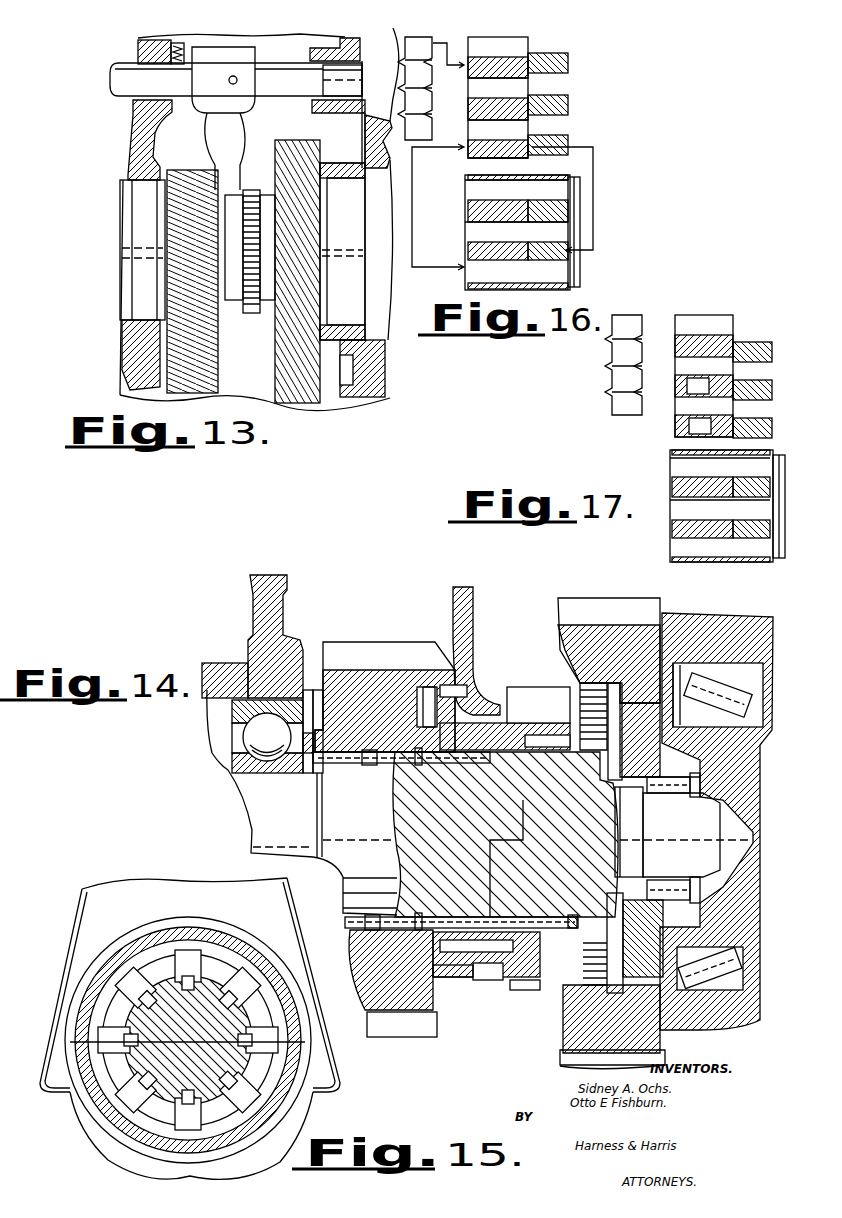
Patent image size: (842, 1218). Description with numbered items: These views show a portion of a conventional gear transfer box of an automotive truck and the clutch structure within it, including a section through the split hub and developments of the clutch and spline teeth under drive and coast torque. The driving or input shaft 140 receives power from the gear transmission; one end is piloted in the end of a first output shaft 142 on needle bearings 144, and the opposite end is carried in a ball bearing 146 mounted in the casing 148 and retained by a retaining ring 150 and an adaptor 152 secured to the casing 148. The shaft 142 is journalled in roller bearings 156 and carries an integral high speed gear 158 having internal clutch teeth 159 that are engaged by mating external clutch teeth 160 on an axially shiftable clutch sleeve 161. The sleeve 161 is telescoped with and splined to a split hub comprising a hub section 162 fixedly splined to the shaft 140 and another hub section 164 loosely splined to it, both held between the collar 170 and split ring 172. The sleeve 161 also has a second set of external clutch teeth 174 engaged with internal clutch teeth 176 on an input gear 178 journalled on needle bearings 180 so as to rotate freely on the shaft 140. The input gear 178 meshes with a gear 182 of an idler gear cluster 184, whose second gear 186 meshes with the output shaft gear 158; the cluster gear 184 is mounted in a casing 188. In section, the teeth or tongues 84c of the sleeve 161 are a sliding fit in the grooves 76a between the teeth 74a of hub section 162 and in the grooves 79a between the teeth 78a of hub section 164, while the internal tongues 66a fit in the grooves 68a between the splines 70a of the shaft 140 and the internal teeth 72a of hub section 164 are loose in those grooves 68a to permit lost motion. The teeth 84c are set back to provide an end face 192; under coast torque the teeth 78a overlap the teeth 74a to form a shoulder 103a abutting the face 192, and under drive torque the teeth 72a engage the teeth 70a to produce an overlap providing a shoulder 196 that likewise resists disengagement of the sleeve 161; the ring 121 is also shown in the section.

In FIG. 16, the internal teeth or tongues 66a is at (553, 210).
In FIG. 17, the internal teeth or tongues 66a is at (773, 478).
In FIG. 15, the internal teeth or tongues 66a is at (180, 1000).
In FIG. 15, the grooves 68a is at (222, 1095).
In FIG. 16, the tongues or splines 70a is at (478, 188).
In FIG. 17, the tongues or splines 70a is at (680, 468).
In FIG. 15, the tongues or splines 70a is at (192, 1192).
In FIG. 16, the internal teeth or tongues 72a is at (480, 208).
In FIG. 17, the internal teeth or tongues 72a is at (680, 484).
In FIG. 15, the internal teeth or tongues 72a is at (215, 1140).
In FIG. 16, the teeth 74a is at (575, 147).
In FIG. 17, the teeth 74a is at (752, 343).
In FIG. 15, the teeth 74a is at (195, 935).
In FIG. 15, the grooves or recesses 76a is at (165, 975).
In FIG. 16, the teeth 78a is at (468, 154).
In FIG. 15, the teeth 78a is at (130, 1130).
In FIG. 15, the grooves or recesses 79a is at (150, 1135).
In FIG. 16, the teeth or tongues 84c is at (510, 88).
In FIG. 17, the teeth or tongues 84c is at (692, 366).
In FIG. 14, the teeth or tongues 84c is at (470, 975).
In FIG. 15, the teeth or tongues 84c is at (212, 950).
In FIG. 16, the shoulder 103a is at (523, 132).
In FIG. 15, the clutch ring 121 is at (272, 1130).
In FIG. 14, the driving or input shaft 140 is at (265, 812).
In FIG. 14, the first output shaft 142 is at (707, 757).
In FIG. 14, the needle bearings 144 is at (685, 875).
In FIG. 14, the ball bearing 146 is at (237, 735).
In FIG. 14, the casing 148 is at (262, 623).
In FIG. 14, the retaining ring 150 is at (232, 708).
In FIG. 14, the adaptor 152 is at (218, 664).
In FIG. 14, the roller bearings 156 is at (722, 672).
In FIG. 13, the high speed gear 158 is at (286, 146).
In FIG. 14, the high speed gear 158 is at (612, 605).
In FIG. 14, the internal clutch teeth 159 is at (590, 668).
In FIG. 14, the external clutch teeth 160 is at (595, 685).
In FIG. 14, the clutch sleeve 161 is at (548, 748).
In FIG. 14, the hub section 162 is at (545, 990).
In FIG. 15, the hub section 162 is at (215, 1000).
In FIG. 14, the hub section 164 is at (475, 912).
In FIG. 15, the hub section 164 is at (95, 1100).
In FIG. 14, the collar 170 is at (435, 1020).
In FIG. 17, the split ring 172 is at (777, 553).
In FIG. 14, the split ring 172 is at (575, 765).
In FIG. 16, the external clutch teeth 174 is at (404, 88).
In FIG. 17, the external clutch teeth 174 is at (615, 403).
In FIG. 14, the external clutch teeth 174 is at (423, 700).
In FIG. 16, the internal clutch teeth 176 is at (432, 72).
In FIG. 17, the internal clutch teeth 176 is at (620, 348).
In FIG. 14, the internal clutch teeth 176 is at (462, 645).
In FIG. 13, the input gear 178 is at (173, 242).
In FIG. 14, the input gear 178 is at (362, 650).
In FIG. 14, the needle bearings 180 is at (340, 765).
In FIG. 13, the gear 182 is at (208, 352).
In FIG. 13, the idler gear cluster 184 is at (247, 393).
In FIG. 13, the second gear 186 is at (300, 402).
In FIG. 13, the casing 188 is at (143, 138).
In FIG. 16, the shoulder or end face 192 is at (529, 88).
In FIG. 17, the shoulder or end face 192 is at (699, 386).
In FIG. 14, the shoulder or end face 192 is at (540, 930).
In FIG. 17, the shoulder 196 is at (701, 426).